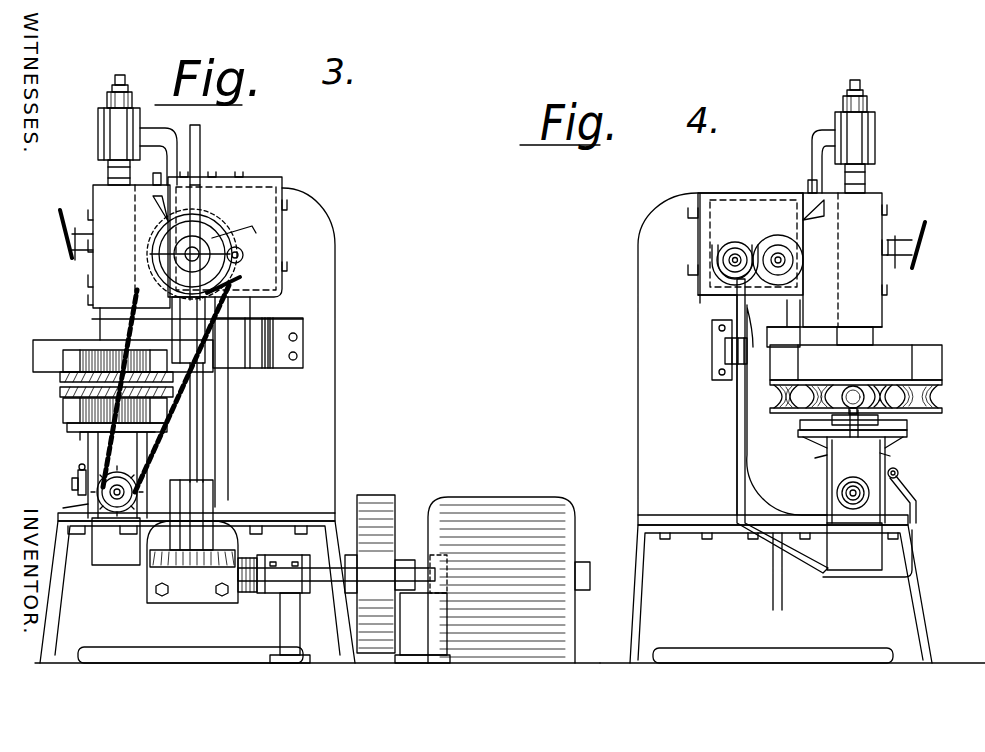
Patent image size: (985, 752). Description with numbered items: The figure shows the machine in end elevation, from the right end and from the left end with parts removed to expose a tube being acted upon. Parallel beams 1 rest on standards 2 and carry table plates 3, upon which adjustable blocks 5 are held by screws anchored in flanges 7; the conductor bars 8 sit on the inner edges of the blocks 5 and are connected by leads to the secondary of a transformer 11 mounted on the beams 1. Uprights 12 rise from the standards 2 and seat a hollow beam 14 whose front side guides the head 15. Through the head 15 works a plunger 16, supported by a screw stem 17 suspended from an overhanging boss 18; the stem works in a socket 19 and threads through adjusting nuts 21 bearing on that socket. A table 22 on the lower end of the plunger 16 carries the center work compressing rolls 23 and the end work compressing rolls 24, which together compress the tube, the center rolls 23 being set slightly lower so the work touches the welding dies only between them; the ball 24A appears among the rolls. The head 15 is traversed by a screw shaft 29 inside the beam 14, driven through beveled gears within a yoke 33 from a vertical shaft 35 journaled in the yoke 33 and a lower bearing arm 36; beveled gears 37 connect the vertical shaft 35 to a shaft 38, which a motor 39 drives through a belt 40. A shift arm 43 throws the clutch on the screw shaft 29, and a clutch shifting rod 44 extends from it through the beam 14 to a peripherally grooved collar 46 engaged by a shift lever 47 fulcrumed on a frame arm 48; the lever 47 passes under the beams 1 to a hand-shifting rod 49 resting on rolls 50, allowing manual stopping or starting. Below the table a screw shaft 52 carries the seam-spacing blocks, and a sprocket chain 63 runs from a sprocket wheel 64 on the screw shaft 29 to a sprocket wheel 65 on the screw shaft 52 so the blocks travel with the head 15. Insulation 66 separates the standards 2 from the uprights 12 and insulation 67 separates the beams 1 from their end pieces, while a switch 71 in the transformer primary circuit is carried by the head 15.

In FIG. 3, the beam 1 is at (68, 506).
In FIG. 4, the beam 1 is at (857, 456).
In FIG. 4, the standard 2 is at (781, 594).
In FIG. 4, the table plate 3 is at (905, 426).
In FIG. 4, the block 5 is at (890, 420).
In FIG. 4, the flange 7 is at (910, 433).
In FIG. 4, the conductor bar 8 is at (855, 437).
In FIG. 3, the transformer 11 is at (75, 406).
In FIG. 3, the upright 12 is at (213, 350).
In FIG. 4, the upright 12 is at (732, 354).
In FIG. 3, the hollow beam 14 is at (258, 205).
In FIG. 4, the hollow beam 14 is at (756, 244).
In FIG. 3, the head 15 is at (129, 246).
In FIG. 4, the head 15 is at (827, 260).
In FIG. 3, the plunger 16 is at (108, 330).
In FIG. 4, the plunger 16 is at (863, 340).
In FIG. 3, the screw stem 17 is at (108, 170).
In FIG. 4, the screw stem 17 is at (865, 178).
In FIG. 3, the overhanging boss 18 is at (98, 134).
In FIG. 4, the overhanging boss 18 is at (875, 142).
In FIG. 3, the socket 19 is at (107, 101).
In FIG. 4, the socket 19 is at (868, 113).
In FIG. 3, the adjusting nut 21 is at (112, 88).
In FIG. 4, the adjusting nut 21 is at (862, 98).
In FIG. 3, the table 22 is at (40, 356).
In FIG. 4, the table 22 is at (930, 362).
In FIG. 4, the center work compressing roll 23 is at (932, 398).
In FIG. 4, the end work compressing roll 24 is at (885, 390).
In FIG. 4, the ball 24A is at (860, 375).
In FIG. 3, the screw shaft 29 is at (180, 254).
In FIG. 4, the screw shaft 29 is at (778, 253).
In FIG. 3, the yoke 33 is at (200, 183).
In FIG. 3, the vertical shaft 35 is at (203, 416).
In FIG. 3, the lower bearing arm 36 is at (212, 509).
In FIG. 3, the beveled gear 37 is at (200, 567).
In FIG. 3, the shaft 38 is at (330, 584).
In FIG. 3, the motor 39 is at (509, 580).
In FIG. 3, the belt 40 is at (388, 525).
In FIG. 3, the shift arm 43 is at (222, 246).
In FIG. 3, the clutch shifting rod 44 is at (244, 255).
In FIG. 4, the clutch shifting rod 44 is at (735, 254).
In FIG. 4, the peripherally grooved collar 46 is at (712, 254).
In FIG. 4, the shift lever 47 is at (737, 318).
In FIG. 4, the frame arm 48 is at (714, 368).
In FIG. 3, the hand-shifting rod 49 is at (78, 472).
In FIG. 4, the hand-shifting rod 49 is at (899, 474).
In FIG. 3, the roll 50 is at (72, 487).
In FIG. 4, the roll 50 is at (914, 505).
In FIG. 3, the screw shaft 52 is at (117, 498).
In FIG. 4, the screw shaft 52 is at (853, 510).
In FIG. 3, the sprocket chain 63 is at (135, 300).
In FIG. 3, the sprocket wheel 64 is at (241, 282).
In FIG. 3, the sprocket wheel 65 is at (120, 472).
In FIG. 3, the insulation 66 is at (268, 513).
In FIG. 4, the insulation 66 is at (677, 522).
In FIG. 3, the insulation 67 is at (90, 455).
In FIG. 4, the insulation 67 is at (880, 459).
In FIG. 3, the switch 71 is at (63, 246).
In FIG. 4, the switch 71 is at (913, 262).